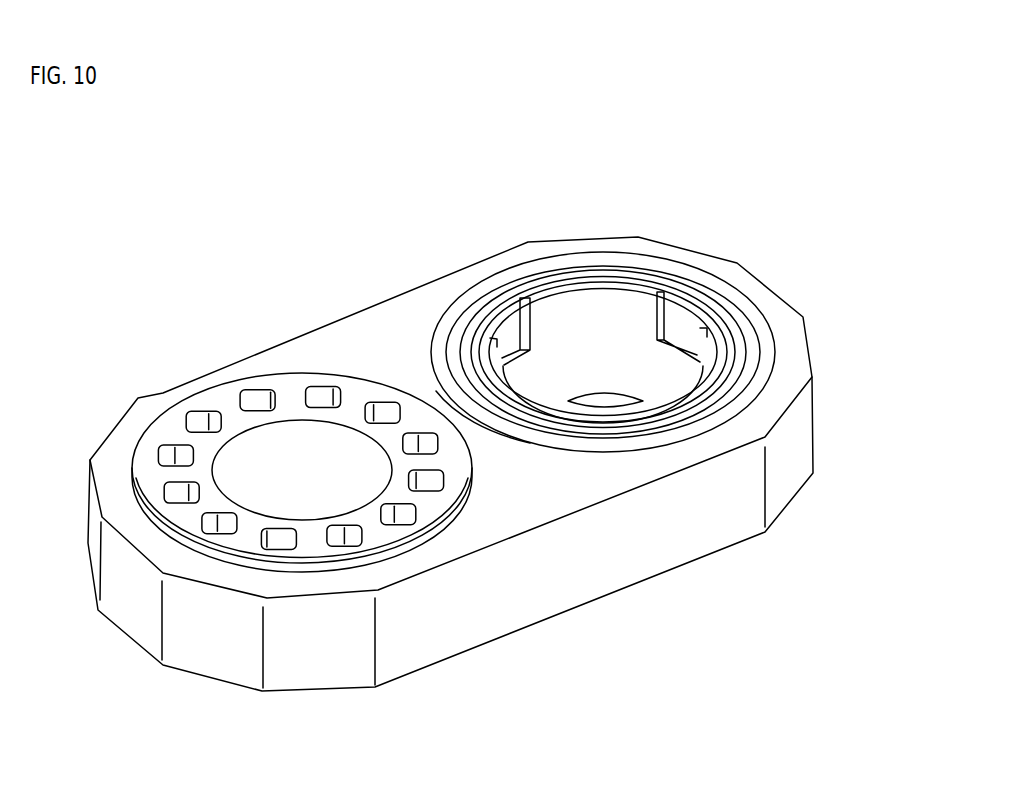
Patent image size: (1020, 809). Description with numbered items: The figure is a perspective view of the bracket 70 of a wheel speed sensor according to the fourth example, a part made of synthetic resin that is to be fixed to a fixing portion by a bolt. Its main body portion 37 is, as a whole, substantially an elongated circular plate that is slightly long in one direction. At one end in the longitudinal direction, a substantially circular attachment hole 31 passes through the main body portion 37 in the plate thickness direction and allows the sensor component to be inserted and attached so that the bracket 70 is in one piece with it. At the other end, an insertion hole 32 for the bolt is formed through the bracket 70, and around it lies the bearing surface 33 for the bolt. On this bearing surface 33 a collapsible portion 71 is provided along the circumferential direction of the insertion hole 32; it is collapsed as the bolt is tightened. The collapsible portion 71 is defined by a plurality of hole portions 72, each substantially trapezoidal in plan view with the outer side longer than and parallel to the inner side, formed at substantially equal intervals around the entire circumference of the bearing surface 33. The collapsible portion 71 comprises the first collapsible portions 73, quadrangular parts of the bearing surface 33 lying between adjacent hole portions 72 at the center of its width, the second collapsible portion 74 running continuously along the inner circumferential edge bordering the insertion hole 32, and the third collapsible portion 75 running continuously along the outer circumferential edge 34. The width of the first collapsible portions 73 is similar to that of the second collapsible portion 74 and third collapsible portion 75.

The bracket 70 is at (331, 216).
The attachment hole 31 is at (597, 309).
The main body portion 37 is at (413, 302).
The bearing surface 33 is at (363, 388).
The collapsible portion 71 is at (287, 387).
The insertion hole 32 is at (262, 450).
The hole portions 72 is at (175, 457).
The first collapsible portions 73 is at (310, 542).
The second collapsible portion 74 is at (337, 520).
The third collapsible portion 75 is at (420, 527).
The outer circumferential edge 34 is at (208, 550).